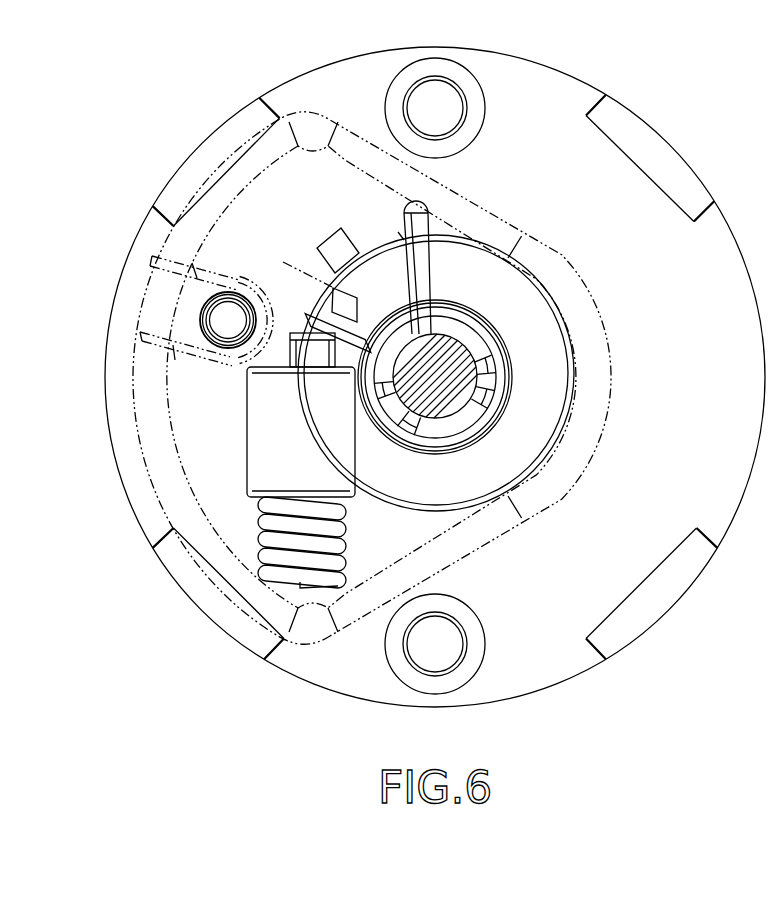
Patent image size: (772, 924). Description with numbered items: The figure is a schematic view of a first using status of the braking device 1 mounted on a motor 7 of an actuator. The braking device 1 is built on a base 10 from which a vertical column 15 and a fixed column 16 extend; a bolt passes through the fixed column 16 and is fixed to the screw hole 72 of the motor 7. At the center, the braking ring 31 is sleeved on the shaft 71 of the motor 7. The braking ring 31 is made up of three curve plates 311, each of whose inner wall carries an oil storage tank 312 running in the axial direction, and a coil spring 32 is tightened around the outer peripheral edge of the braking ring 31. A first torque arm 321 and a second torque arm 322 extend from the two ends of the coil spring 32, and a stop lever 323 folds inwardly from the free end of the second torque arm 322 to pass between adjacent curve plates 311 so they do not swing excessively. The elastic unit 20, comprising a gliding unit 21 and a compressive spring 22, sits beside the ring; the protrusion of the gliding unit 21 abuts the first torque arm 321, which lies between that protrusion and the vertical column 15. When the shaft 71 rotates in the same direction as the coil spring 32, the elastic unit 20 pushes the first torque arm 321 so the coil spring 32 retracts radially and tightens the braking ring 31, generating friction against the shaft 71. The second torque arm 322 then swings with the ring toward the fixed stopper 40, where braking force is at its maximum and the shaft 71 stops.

The braking device 1 is at (130, 382).
The motor 7 is at (542, 58).
The base 10 is at (140, 353).
The vertical column 15 is at (283, 262).
The fixed column 16 is at (150, 286).
The elastic unit 20 is at (78, 445).
The gliding unit 21 is at (245, 440).
The compressive spring 22 is at (258, 536).
The braking ring 31 is at (538, 444).
The coil spring 32 is at (472, 304).
The stopper 40 is at (332, 248).
The shaft 71 is at (453, 367).
The screw hole 72 is at (222, 322).
The curve plates 311 is at (492, 370).
The oil storage tank 312 is at (450, 415).
The first torque arm 321 is at (306, 312).
The second torque arm 322 is at (430, 233).
The stop lever 323 is at (402, 232).